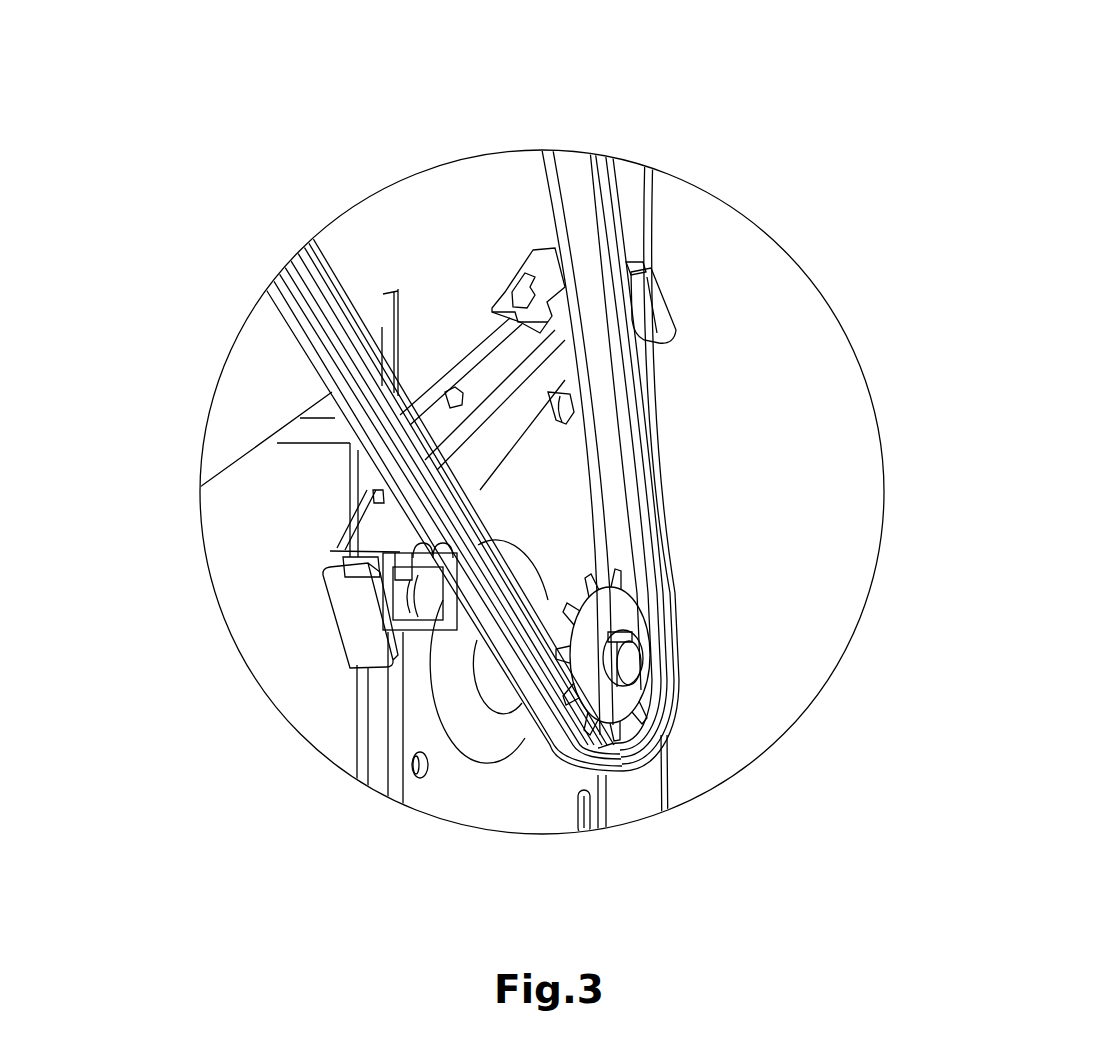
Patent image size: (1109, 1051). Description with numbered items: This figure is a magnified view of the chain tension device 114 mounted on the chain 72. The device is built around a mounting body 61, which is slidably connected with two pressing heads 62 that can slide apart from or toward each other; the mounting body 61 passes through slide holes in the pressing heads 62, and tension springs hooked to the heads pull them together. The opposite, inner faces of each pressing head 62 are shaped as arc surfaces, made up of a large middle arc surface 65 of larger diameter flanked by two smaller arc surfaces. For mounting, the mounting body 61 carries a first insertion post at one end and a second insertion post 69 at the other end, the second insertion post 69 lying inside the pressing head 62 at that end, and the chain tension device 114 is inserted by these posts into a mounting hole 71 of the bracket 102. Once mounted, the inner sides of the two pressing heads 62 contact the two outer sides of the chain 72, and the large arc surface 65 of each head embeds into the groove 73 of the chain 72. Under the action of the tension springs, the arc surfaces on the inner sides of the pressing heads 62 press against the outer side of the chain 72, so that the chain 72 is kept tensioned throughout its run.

The mounting body 61 is at (515, 392).
The pressing head 62 is at (650, 308).
The large middle arc surface 65 is at (332, 552).
The second insertion post 69 is at (352, 350).
The mounting hole 71 is at (447, 387).
The chain 72 is at (593, 210).
The groove 73 is at (413, 500).
The bracket 102 is at (467, 752).
The chain tension device 114 is at (493, 453).